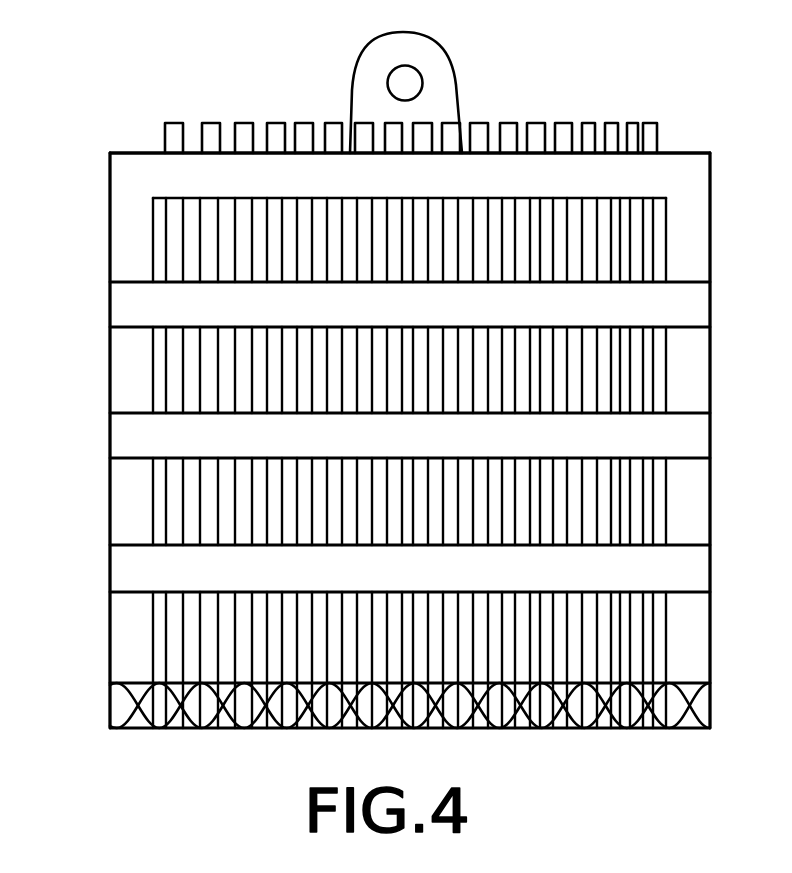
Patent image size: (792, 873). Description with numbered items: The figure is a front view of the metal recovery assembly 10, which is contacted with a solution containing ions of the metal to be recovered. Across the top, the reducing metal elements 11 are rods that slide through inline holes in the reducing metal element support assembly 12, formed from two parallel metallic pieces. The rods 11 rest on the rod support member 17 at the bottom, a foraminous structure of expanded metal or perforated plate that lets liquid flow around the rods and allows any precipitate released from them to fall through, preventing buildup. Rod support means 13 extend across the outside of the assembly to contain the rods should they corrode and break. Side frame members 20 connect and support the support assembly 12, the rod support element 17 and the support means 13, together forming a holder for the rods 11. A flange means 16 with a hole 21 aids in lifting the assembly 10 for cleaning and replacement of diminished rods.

The metal recovery assembly 10 is at (710, 190).
The reducing metal elements 11 is at (240, 123).
The reducing metal element support assembly 12 is at (135, 152).
The rod support means 13 is at (122, 303).
The flange means 16 is at (425, 35).
The rod support member 17 is at (110, 707).
The side frame members 20 is at (110, 237).
The hole 21 is at (422, 83).